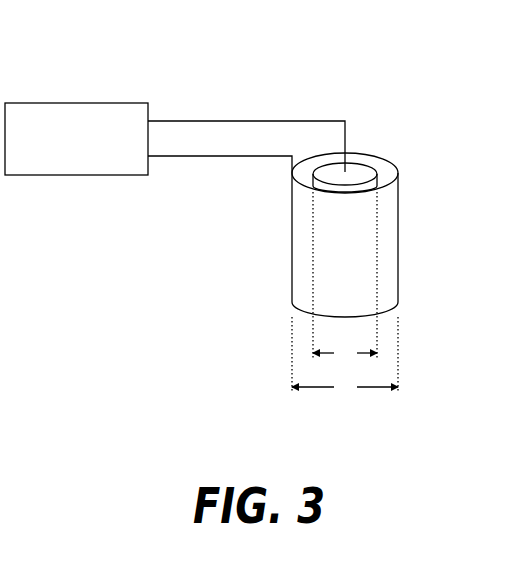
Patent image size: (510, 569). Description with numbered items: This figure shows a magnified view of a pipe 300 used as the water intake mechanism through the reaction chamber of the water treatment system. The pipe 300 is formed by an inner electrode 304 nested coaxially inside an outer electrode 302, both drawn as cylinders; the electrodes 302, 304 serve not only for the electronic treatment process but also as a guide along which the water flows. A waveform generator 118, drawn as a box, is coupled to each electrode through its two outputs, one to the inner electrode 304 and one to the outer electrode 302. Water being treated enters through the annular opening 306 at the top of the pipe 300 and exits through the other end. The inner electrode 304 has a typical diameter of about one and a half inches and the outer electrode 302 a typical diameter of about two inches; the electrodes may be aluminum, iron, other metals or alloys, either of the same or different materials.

The pipe 300 is at (128, 64).
The waveform generator 118 is at (95, 103).
The outer electrode 302 is at (399, 217).
The inner electrode 304 is at (360, 163).
The opening 306 is at (381, 167).